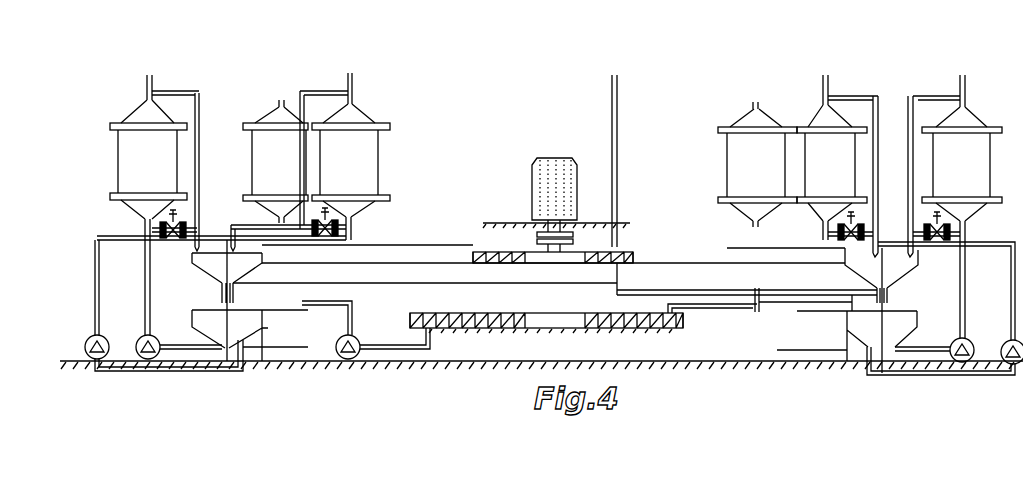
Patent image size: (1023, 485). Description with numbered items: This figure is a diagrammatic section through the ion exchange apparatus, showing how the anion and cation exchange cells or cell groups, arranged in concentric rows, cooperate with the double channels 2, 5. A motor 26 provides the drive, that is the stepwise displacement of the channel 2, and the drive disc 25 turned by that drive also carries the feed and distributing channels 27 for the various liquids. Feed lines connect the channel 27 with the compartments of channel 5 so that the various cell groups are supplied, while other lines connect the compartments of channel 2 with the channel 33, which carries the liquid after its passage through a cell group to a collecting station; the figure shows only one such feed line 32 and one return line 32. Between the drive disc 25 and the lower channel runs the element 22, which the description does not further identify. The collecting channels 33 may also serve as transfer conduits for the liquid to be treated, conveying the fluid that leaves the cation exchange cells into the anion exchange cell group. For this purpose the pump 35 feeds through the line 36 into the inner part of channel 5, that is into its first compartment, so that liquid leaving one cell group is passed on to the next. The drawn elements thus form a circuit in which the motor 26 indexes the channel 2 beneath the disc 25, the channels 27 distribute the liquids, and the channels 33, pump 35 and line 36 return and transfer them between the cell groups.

The double channel 2 is at (913, 263).
The double channel 5 is at (196, 318).
The guide tube 22 is at (724, 296).
The drive disc 25 is at (690, 273).
The motor 26 is at (540, 176).
The feed and distributing channels 27 is at (624, 256).
The feed line 32 is at (722, 310).
The collecting channel 33 is at (678, 329).
The pump 35 is at (358, 344).
The line 36 is at (333, 306).